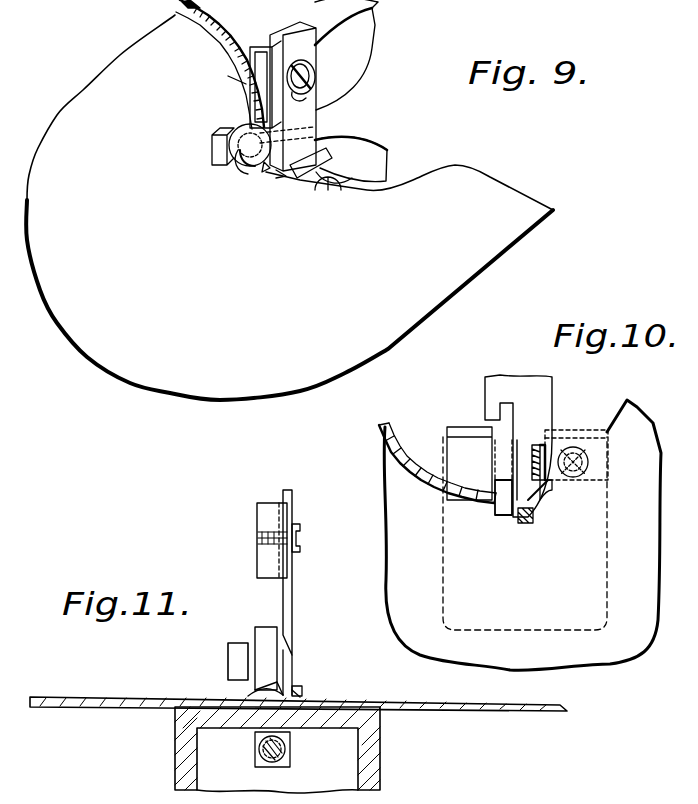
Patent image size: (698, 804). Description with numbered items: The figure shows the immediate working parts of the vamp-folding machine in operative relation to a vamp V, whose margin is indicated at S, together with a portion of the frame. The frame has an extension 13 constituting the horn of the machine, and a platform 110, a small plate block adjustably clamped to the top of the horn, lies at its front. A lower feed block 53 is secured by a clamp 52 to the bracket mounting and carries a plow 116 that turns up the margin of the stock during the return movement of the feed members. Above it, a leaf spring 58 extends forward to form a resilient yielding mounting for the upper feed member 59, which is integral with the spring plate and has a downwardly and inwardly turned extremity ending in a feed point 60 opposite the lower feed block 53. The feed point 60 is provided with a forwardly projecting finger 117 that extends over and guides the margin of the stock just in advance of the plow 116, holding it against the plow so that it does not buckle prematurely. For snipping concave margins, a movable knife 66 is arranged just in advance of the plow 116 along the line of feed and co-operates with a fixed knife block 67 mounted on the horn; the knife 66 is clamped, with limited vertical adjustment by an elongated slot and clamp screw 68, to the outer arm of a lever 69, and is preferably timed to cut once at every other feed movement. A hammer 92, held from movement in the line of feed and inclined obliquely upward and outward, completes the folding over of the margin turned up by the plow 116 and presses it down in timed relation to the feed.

In FIG. 9, the sheet material / work plate V is at (490, 178).
In FIG. 10, the sheet material / work plate V is at (628, 400).
In FIG. 11, the sheet material / work plate V is at (501, 712).
In FIG. 9, the scale strip S is at (176, 12).
In FIG. 10, the scale strip S is at (437, 463).
In FIG. 11, the extension 13 is at (381, 750).
In FIG. 11, the clamp 52 is at (291, 749).
In FIG. 10, the lower feed block 53 is at (545, 404).
In FIG. 9, the leaf spring 58 is at (360, 135).
In FIG. 9, the upper feed member 59 is at (236, 127).
In FIG. 10, the upper feed member 59 is at (524, 523).
In FIG. 11, the upper feed member 59 is at (265, 632).
In FIG. 9, the feed point 60 is at (250, 160).
In FIG. 10, the feed point 60 is at (538, 500).
In FIG. 9, the movable knife 66 is at (308, 30).
In FIG. 10, the movable knife 66 is at (538, 446).
In FIG. 11, the movable knife 66 is at (293, 495).
In FIG. 9, the fixed knife block 67 is at (311, 178).
In FIG. 10, the fixed knife block 67 is at (590, 462).
In FIG. 11, the fixed knife block 67 is at (300, 690).
In FIG. 9, the elongated slot and clamp screw 68 is at (316, 78).
In FIG. 11, the elongated slot and clamp screw 68 is at (300, 540).
In FIG. 9, the lever 69 is at (374, 49).
In FIG. 11, the lever 69 is at (258, 524).
In FIG. 9, the hammer 92 is at (222, 160).
In FIG. 10, the hammer 92 is at (503, 515).
In FIG. 11, the hammer 92 is at (228, 664).
In FIG. 10, the platform 110 is at (597, 616).
In FIG. 11, the platform 110 is at (381, 720).
In FIG. 9, the plow 116 is at (212, 142).
In FIG. 10, the plow 116 is at (500, 467).
In FIG. 9, the forwardly projecting finger 117 is at (265, 172).
In FIG. 10, the forwardly projecting finger 117 is at (552, 488).
In FIG. 11, the forwardly projecting finger 117 is at (302, 692).